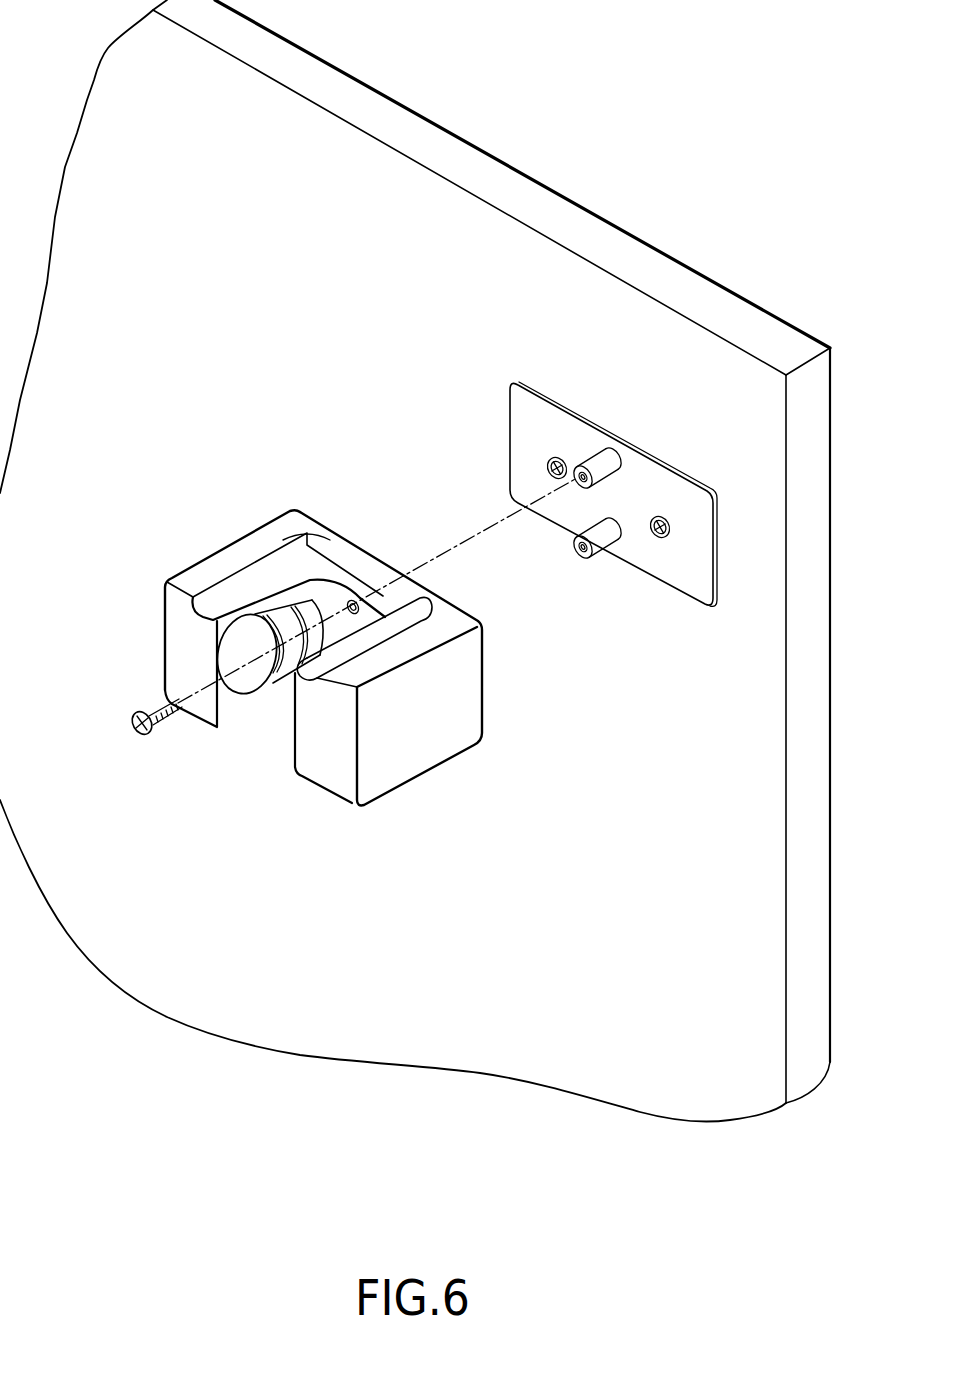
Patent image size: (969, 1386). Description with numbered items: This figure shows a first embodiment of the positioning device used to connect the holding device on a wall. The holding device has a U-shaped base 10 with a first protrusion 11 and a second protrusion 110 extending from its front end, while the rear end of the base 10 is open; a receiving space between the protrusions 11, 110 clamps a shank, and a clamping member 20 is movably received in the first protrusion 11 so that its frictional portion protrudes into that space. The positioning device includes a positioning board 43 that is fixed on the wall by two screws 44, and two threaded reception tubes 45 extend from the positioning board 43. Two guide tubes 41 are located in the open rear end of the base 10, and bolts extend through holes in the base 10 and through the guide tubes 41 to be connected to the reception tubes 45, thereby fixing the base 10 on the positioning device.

The U-shaped base 10 is at (347, 525).
The first protrusion 11 is at (235, 557).
The second protrusion 110 is at (463, 673).
The clamping member 20 is at (241, 708).
The guide tubes 41 is at (378, 606).
The positioning board 43 is at (698, 525).
The screws 44 is at (670, 533).
The threaded reception tubes 45 is at (602, 465).